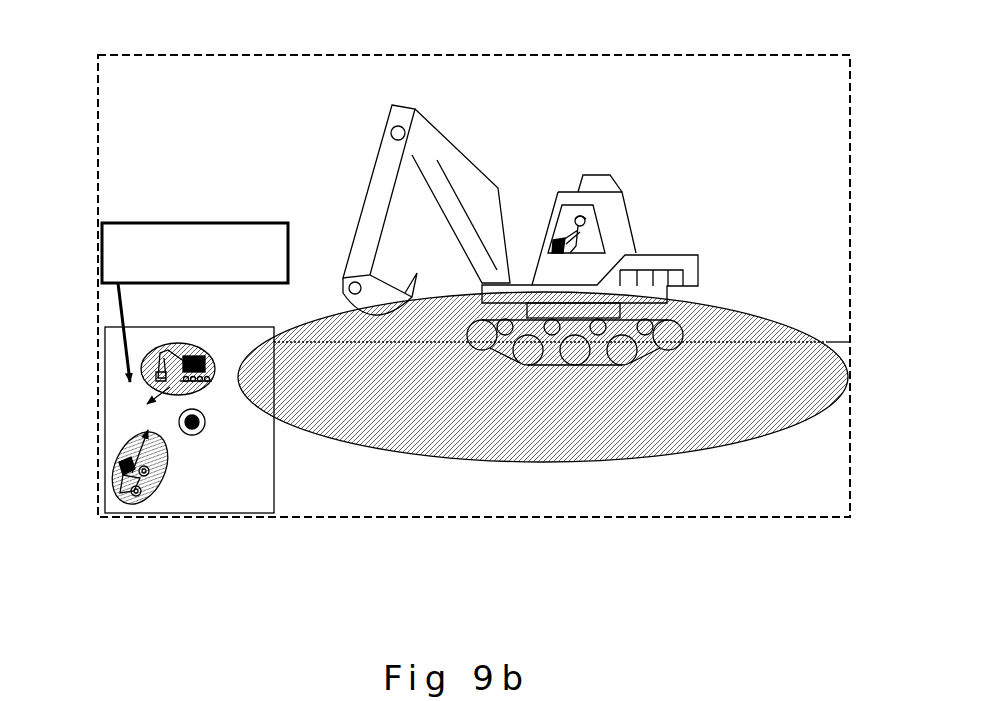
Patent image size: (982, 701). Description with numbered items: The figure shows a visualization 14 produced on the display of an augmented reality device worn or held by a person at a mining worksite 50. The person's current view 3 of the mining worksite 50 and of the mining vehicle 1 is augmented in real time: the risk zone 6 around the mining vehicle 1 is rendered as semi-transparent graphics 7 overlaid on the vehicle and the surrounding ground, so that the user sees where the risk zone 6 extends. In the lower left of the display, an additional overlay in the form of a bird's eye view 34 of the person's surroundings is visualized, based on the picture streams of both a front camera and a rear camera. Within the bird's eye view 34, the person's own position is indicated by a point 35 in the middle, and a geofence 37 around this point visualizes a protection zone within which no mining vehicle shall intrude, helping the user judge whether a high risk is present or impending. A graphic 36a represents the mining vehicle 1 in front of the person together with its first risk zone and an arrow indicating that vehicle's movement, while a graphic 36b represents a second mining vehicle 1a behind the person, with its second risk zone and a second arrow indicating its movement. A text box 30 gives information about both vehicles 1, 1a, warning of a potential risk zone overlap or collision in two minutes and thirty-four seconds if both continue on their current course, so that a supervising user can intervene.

The visualization 14 is at (868, 51).
The current view 3 is at (834, 170).
The mining worksite 50 is at (205, 120).
The text box 30 is at (125, 222).
The mining vehicle 1 is at (698, 257).
The risk zone 6 is at (762, 291).
The semi-transparent graphics 7 is at (688, 418).
The bird's eye view 34 is at (262, 509).
The point 35 is at (202, 431).
The graphic 36a is at (206, 339).
The graphic 36b is at (166, 495).
The geofence 37 is at (196, 434).
The second mining vehicle 1a is at (130, 477).